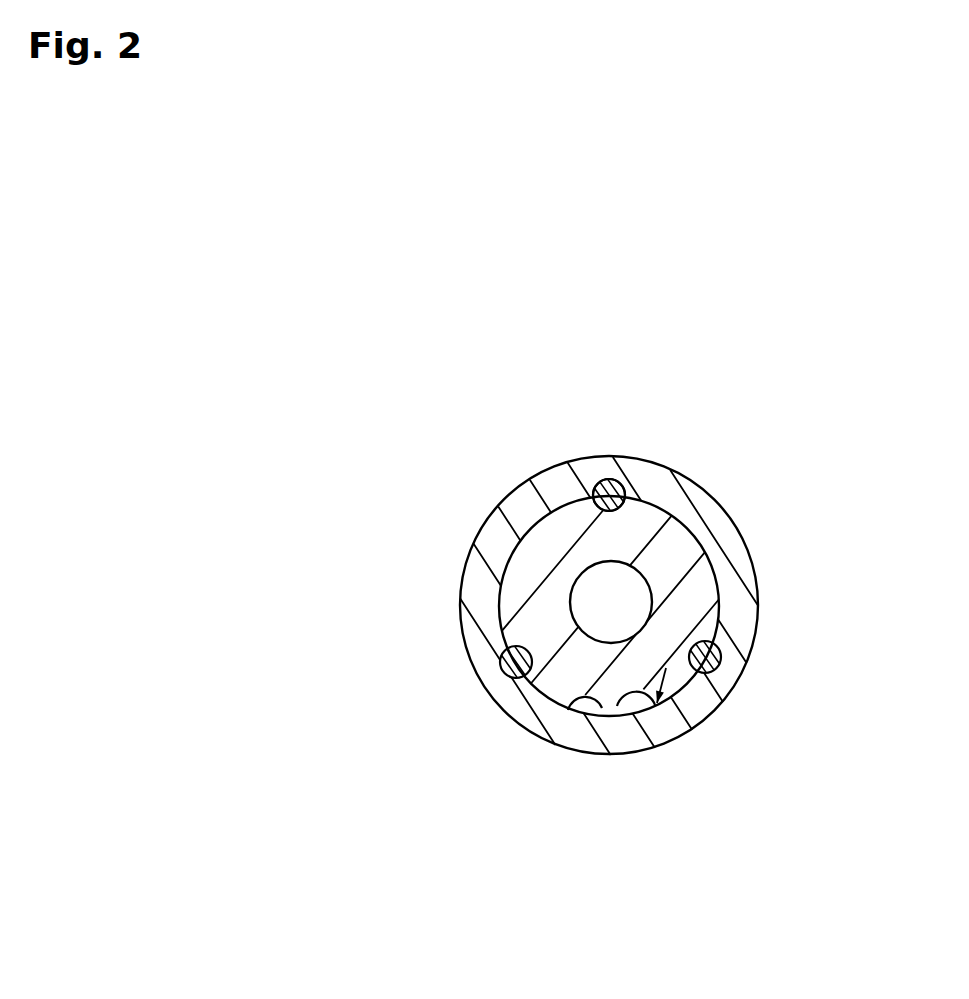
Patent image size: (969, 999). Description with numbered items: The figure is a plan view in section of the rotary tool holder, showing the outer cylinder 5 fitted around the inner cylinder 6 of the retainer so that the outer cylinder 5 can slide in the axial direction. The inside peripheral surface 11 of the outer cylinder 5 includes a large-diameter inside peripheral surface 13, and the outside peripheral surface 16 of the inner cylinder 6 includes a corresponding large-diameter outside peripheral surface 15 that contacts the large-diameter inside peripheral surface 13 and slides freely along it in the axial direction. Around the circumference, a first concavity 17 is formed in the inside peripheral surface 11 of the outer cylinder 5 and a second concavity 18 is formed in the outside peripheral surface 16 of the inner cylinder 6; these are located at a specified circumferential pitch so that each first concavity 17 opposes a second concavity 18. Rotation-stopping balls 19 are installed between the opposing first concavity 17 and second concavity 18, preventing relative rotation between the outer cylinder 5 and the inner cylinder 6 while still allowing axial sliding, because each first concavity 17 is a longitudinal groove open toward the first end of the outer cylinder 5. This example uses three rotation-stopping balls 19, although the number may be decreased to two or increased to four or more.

The outer cylinder 5 is at (742, 532).
The inner cylinder 6 is at (550, 607).
The inside peripheral surface 11 is at (619, 712).
The large-diameter inside peripheral surface 13 is at (573, 708).
The large-diameter outside peripheral surface 15 is at (510, 552).
The outside peripheral surface 16 is at (533, 512).
The first concavity 17 is at (633, 497).
The second concavity 18 is at (597, 483).
The rotation-stopping balls 19 is at (605, 478).